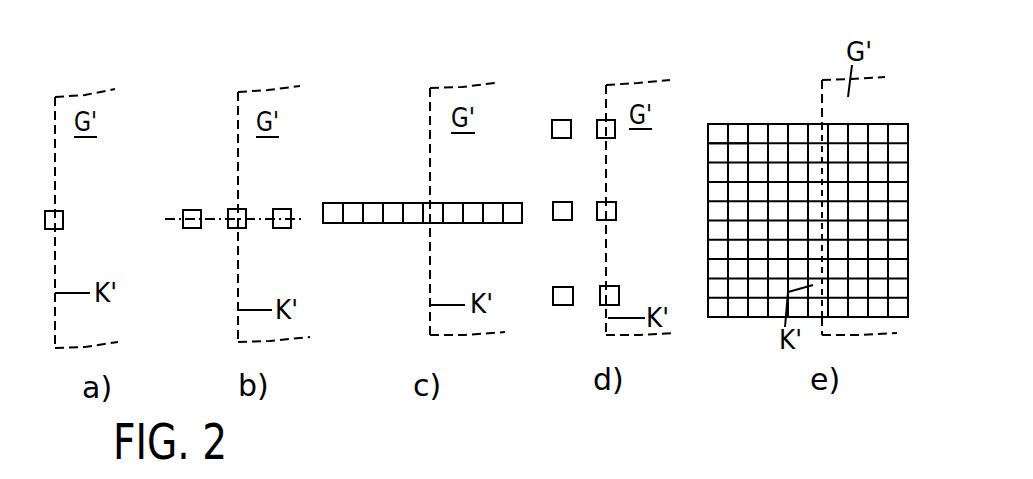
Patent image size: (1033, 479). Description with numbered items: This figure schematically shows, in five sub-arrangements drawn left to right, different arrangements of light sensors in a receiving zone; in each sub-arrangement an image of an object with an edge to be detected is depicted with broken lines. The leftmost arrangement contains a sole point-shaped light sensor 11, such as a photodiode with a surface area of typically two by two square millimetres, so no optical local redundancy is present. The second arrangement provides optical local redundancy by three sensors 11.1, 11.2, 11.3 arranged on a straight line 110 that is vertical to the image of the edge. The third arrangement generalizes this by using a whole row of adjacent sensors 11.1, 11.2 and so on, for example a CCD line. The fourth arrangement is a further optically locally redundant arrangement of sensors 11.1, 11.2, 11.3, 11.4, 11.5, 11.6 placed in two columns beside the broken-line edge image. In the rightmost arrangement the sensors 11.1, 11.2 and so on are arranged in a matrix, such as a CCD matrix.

The light sensor 11 is at (63, 220).
The light sensor 11.1 is at (192, 208).
The light sensor 11.2 is at (247, 209).
The light sensor 11.3 is at (279, 228).
The light sensor 11.4 is at (613, 202).
The light sensor 11.5 is at (563, 287).
The light sensor 11.6 is at (613, 286).
The straight line 110 is at (175, 219).